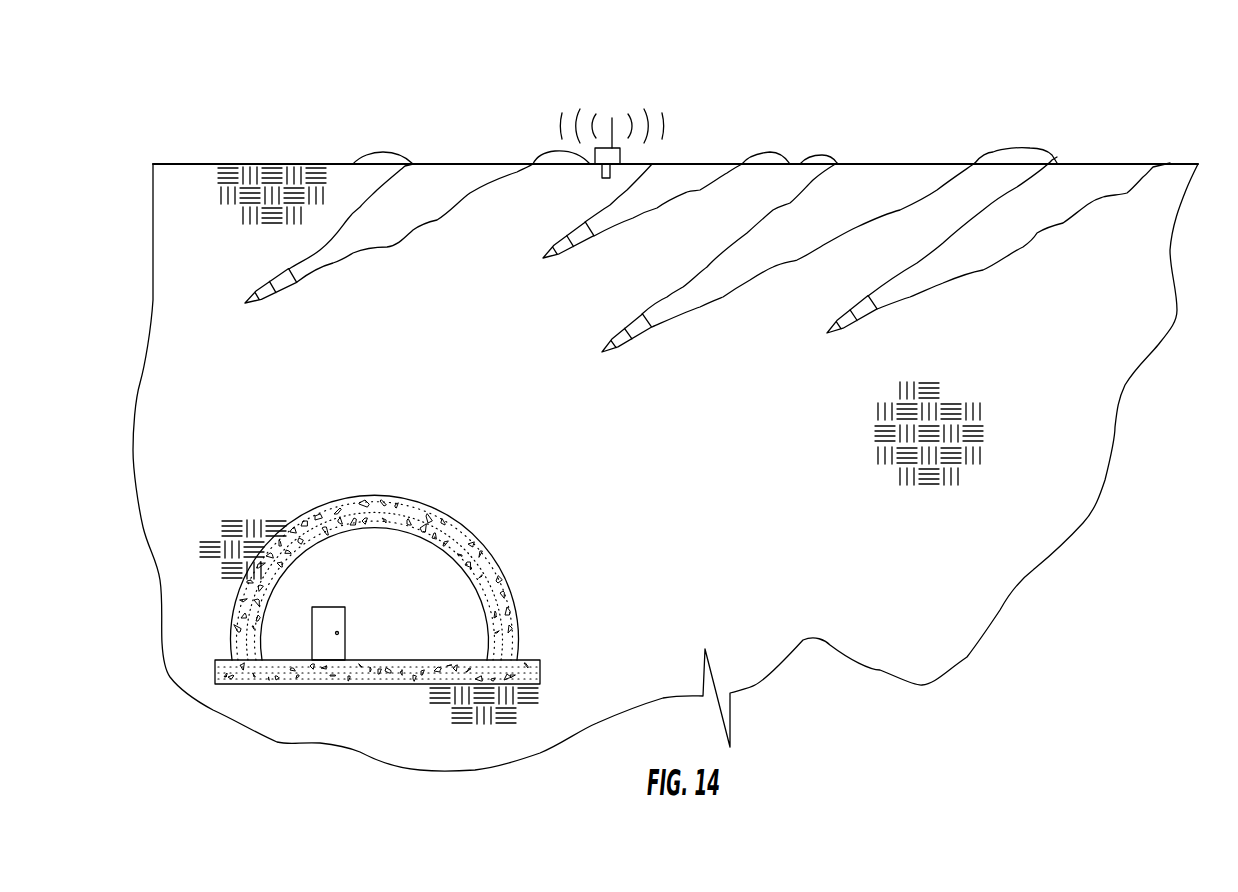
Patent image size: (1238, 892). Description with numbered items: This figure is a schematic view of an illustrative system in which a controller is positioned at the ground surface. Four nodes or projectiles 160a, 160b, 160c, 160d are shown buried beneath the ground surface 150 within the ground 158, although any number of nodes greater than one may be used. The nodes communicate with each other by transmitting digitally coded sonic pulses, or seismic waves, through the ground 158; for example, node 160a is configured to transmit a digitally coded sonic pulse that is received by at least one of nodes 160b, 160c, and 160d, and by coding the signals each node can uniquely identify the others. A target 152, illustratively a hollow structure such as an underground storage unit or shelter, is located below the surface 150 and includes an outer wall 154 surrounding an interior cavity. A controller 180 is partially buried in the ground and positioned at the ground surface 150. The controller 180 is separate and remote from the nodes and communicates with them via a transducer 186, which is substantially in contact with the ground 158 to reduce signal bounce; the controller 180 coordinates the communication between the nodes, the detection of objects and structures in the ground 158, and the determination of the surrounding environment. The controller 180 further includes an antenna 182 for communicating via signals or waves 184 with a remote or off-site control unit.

The ground surface 150 is at (337, 163).
The target 152 is at (416, 576).
The outer wall 154 is at (302, 522).
The ground 158 is at (990, 585).
The node 160a is at (258, 292).
The node 160b is at (558, 250).
The node 160c is at (618, 335).
The node 160d is at (843, 325).
The controller 180 is at (595, 102).
The antenna 182 is at (618, 146).
The transmitted signal 184 is at (556, 105).
The transducer 186 is at (593, 168).